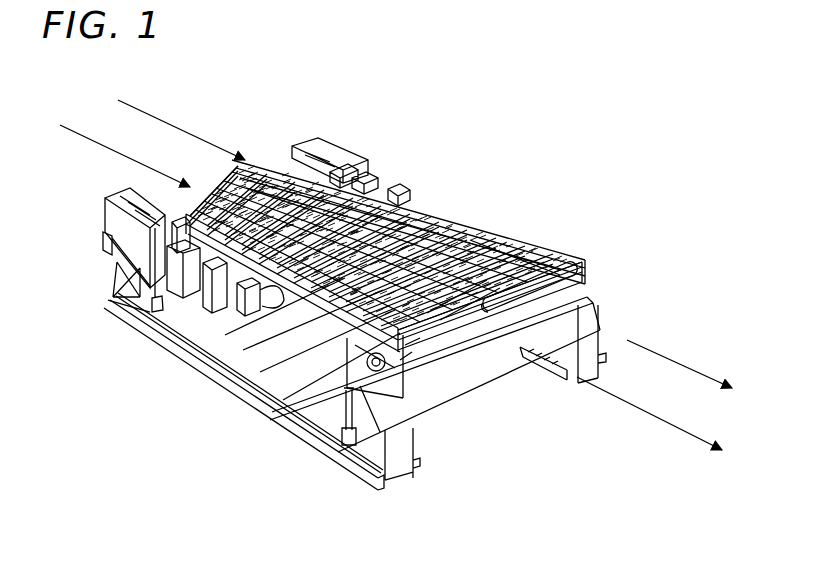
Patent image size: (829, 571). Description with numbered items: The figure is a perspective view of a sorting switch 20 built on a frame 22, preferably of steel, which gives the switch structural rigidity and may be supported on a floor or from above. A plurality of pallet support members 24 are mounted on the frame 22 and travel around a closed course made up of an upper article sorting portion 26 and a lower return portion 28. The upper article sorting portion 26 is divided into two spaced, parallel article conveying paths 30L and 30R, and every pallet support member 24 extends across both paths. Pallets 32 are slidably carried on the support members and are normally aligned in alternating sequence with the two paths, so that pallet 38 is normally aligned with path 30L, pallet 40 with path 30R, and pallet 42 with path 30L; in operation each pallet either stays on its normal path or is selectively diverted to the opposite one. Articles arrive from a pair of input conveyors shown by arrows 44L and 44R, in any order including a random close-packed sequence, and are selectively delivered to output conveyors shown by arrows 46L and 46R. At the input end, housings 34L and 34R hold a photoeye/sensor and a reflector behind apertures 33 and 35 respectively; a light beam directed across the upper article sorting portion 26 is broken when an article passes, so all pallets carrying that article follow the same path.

The sorting switch 20 is at (272, 108).
The frame 22 is at (160, 347).
The pallet support members 24 is at (440, 232).
The upper article sorting portion 26 is at (382, 206).
The lower return portion 28 is at (330, 372).
The article conveying path 30L is at (478, 212).
The article conveying path 30R is at (275, 325).
The pallets 32 is at (483, 232).
The aperture 33 is at (337, 162).
The housing 34L is at (300, 142).
The housing 34R is at (100, 232).
The aperture 35 is at (158, 197).
The pallet 38 is at (456, 222).
The pallet 40 is at (280, 318).
The pallet 42 is at (441, 212).
The input conveyor 44L is at (170, 122).
The input conveyor 44R is at (92, 143).
The output conveyor 46L is at (657, 350).
The output conveyor 46R is at (640, 410).